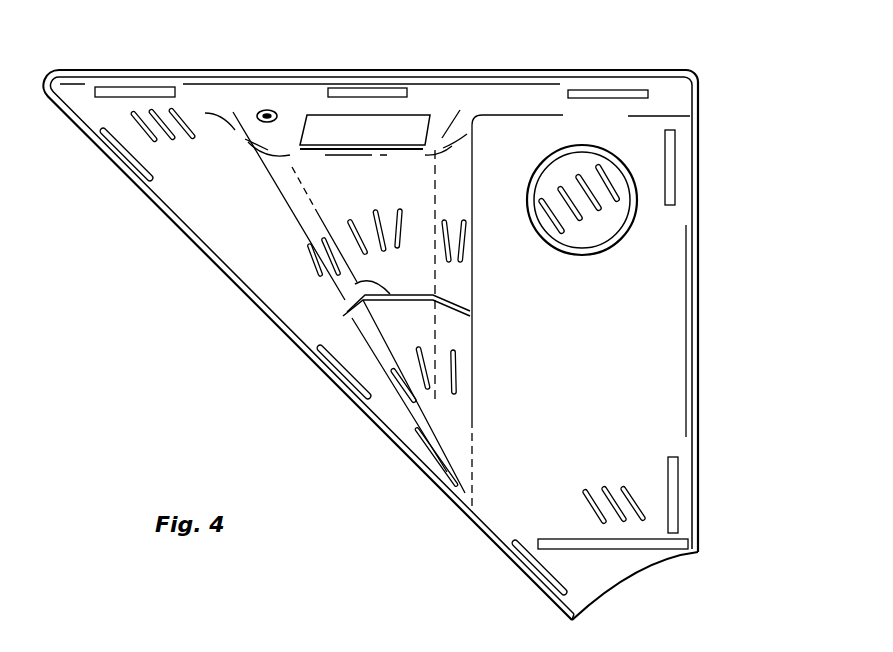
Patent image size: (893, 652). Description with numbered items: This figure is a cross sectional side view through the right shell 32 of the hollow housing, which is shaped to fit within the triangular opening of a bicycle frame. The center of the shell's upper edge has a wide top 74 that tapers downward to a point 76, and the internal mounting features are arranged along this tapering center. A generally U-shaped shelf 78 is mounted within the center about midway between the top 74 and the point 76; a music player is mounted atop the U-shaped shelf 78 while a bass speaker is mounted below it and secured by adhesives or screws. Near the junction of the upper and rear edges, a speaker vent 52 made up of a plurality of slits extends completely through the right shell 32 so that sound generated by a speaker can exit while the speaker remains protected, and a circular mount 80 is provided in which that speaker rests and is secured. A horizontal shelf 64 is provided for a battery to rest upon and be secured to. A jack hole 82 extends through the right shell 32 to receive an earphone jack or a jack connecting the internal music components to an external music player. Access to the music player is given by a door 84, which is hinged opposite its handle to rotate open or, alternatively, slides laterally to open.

The right shell 32 is at (491, 70).
The speaker vent 52 is at (597, 196).
The horizontal shelf 64 is at (628, 550).
The top 74 is at (290, 133).
The point 76 is at (468, 496).
The U-shaped shelf 78 is at (357, 283).
The circular mount 80 is at (615, 155).
The jack hole 82 is at (267, 110).
The door 84 is at (367, 133).